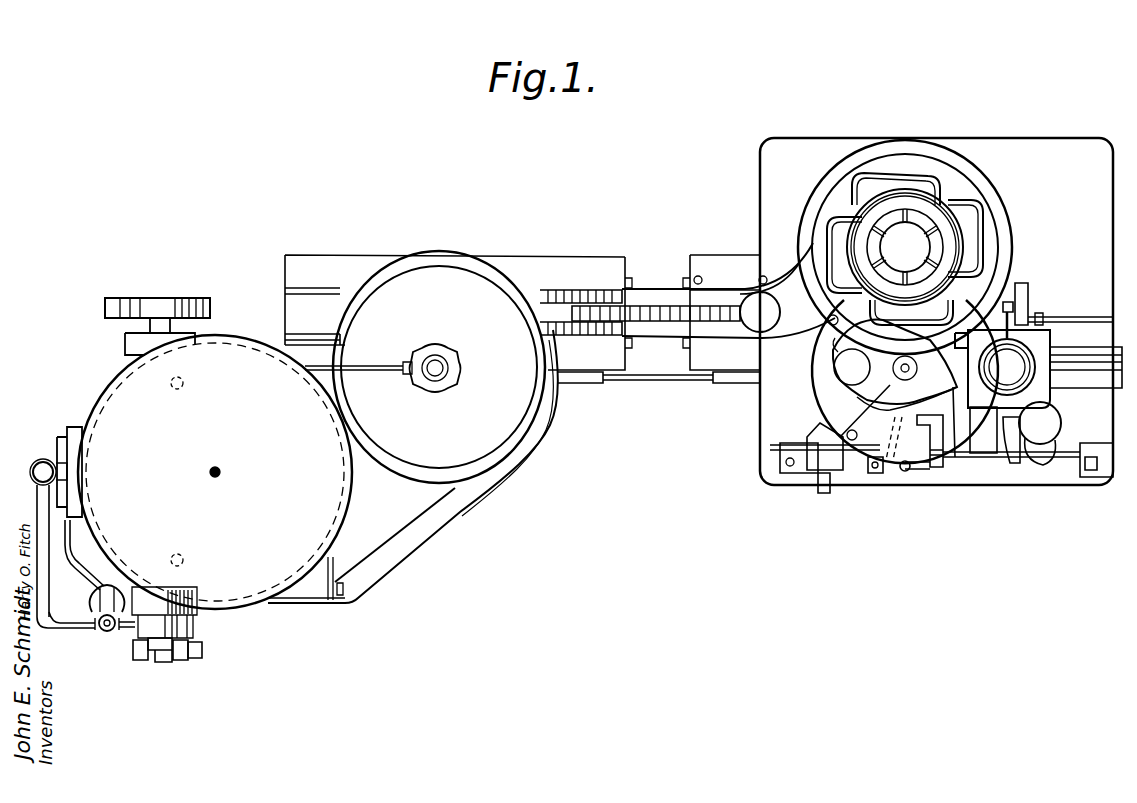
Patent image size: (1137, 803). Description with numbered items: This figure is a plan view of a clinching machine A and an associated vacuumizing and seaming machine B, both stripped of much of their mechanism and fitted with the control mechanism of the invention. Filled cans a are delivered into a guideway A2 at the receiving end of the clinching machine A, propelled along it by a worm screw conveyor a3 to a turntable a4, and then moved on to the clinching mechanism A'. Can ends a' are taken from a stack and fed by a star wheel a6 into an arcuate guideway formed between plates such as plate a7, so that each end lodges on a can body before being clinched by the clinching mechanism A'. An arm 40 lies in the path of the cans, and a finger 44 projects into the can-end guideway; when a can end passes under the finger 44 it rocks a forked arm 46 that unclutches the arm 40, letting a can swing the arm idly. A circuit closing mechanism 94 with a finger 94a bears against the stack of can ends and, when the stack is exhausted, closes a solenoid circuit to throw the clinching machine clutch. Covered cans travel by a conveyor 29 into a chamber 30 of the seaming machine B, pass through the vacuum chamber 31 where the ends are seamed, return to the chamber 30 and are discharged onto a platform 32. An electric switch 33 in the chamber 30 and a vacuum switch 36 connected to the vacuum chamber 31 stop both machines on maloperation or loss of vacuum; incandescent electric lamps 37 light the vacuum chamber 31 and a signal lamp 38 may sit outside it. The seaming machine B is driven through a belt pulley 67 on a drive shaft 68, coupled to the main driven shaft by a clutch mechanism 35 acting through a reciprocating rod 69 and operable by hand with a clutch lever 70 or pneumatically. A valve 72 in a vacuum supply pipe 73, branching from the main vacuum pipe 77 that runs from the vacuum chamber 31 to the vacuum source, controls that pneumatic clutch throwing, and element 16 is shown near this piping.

The clinching machine A is at (936, 285).
The clinching mechanism A' is at (903, 228).
The guideway A2 is at (1080, 442).
The vacuumizing and seaming machine B is at (259, 318).
The filled cans a is at (1015, 433).
The can ends a' is at (887, 346).
The worm screw conveyor a3 is at (1030, 470).
The turntable a4 is at (845, 345).
The star wheel a6 is at (905, 381).
The plate a7 is at (897, 421).
The valve 16 is at (95, 605).
The conveyor 29 is at (657, 300).
The chamber 30 is at (445, 283).
The vacuum chamber 31 is at (330, 497).
The platform 32 is at (307, 300).
The electric switch 33 is at (440, 352).
The clutch mechanism 35 is at (182, 663).
The vacuum switch 36 is at (64, 440).
The incandescent electric lamps 37 is at (184, 383).
The signal lamp 38 is at (220, 468).
The arm 40 is at (883, 475).
The finger 44 is at (935, 410).
The forked arm 46 is at (927, 472).
The belt pulley 67 is at (116, 298).
The drive shaft 68 is at (162, 325).
The reciprocating rod 69 is at (158, 663).
The clutch lever 70 is at (205, 650).
The valve 72 is at (107, 633).
The vacuum supply pipe 73 is at (88, 632).
The main vacuum pipe 77 is at (40, 462).
The circuit closing mechanism 94 is at (1032, 282).
The finger 94a is at (1010, 322).